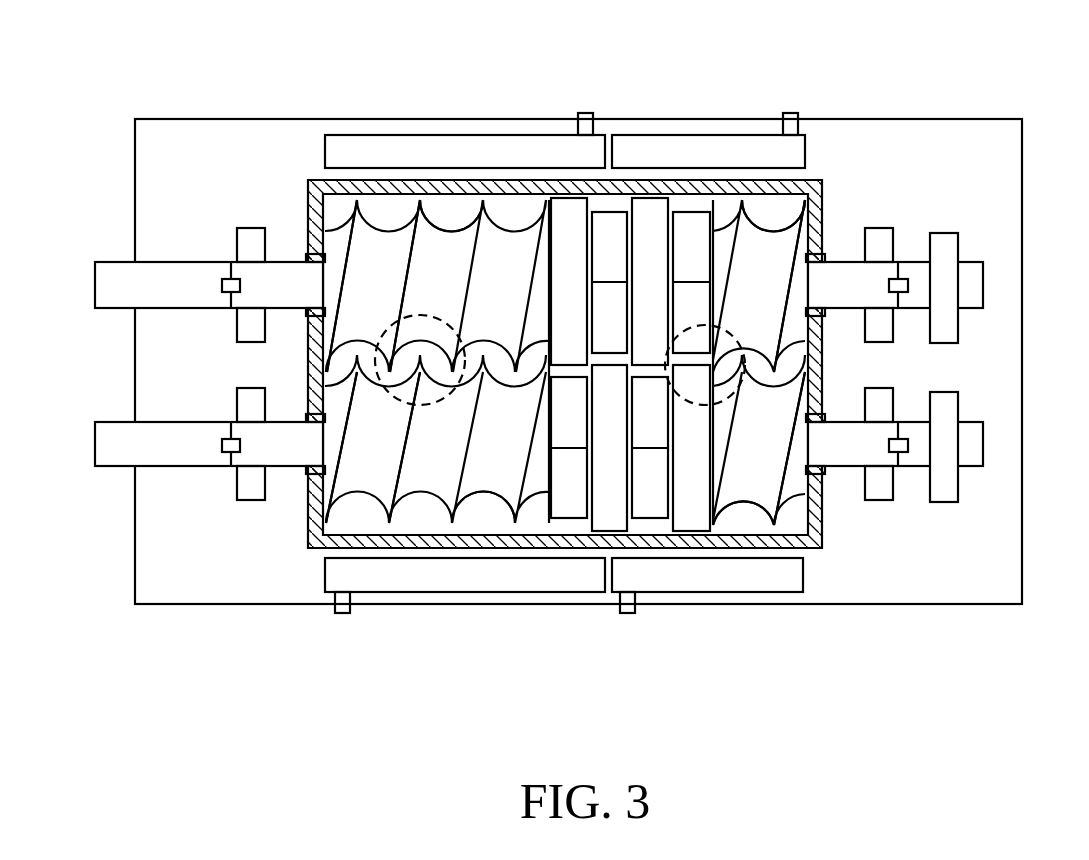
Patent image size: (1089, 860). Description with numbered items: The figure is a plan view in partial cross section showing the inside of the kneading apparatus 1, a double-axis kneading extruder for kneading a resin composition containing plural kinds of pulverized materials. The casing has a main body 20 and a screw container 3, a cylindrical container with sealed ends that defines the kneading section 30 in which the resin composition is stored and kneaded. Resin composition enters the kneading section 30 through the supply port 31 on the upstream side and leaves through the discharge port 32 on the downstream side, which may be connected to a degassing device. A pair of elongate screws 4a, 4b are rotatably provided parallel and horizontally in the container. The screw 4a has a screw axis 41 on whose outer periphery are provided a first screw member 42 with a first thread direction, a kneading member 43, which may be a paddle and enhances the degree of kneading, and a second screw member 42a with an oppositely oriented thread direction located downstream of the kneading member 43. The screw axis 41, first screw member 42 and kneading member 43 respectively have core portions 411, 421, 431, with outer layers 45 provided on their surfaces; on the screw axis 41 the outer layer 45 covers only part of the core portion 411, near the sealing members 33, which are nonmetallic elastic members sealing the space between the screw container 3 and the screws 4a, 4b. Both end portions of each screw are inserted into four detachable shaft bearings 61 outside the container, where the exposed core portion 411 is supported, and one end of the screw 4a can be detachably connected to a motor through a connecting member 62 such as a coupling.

The kneading apparatus 1 is at (862, 28).
The screw container 3 is at (623, 174).
The main body 20 is at (272, 582).
The kneading section 30 is at (530, 205).
The supply port 31 is at (413, 238).
The discharge port 32 is at (706, 222).
The sealing member 33 is at (305, 256).
The screw 4a is at (512, 220).
The screw 4b is at (543, 532).
The screw axis 41 is at (300, 282).
The core portion 411 is at (287, 285).
The first screw member 42 is at (382, 248).
The second screw member 42a is at (812, 250).
The core portion 421 is at (458, 250).
The kneading member 43 is at (658, 210).
The core portion 431 is at (652, 213).
The outer layer 45 is at (442, 248).
The shaft bearing 61 is at (250, 245).
The connecting member 62 is at (224, 283).